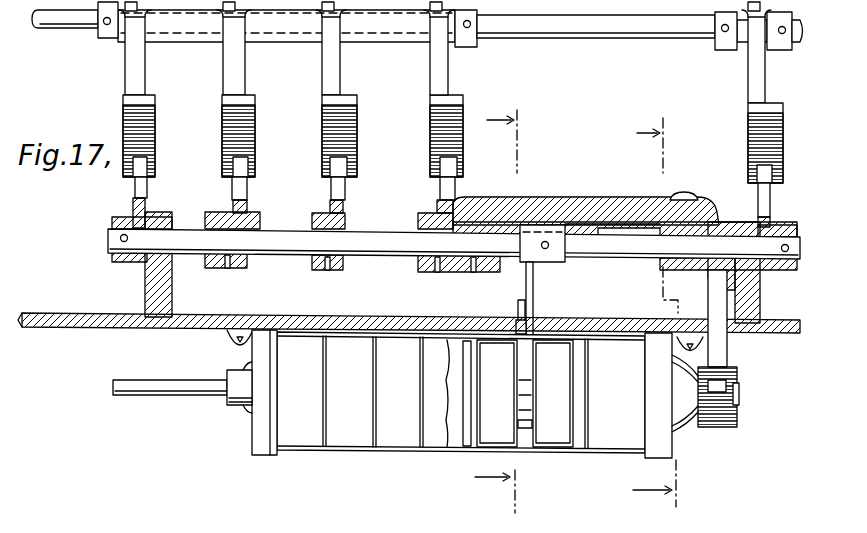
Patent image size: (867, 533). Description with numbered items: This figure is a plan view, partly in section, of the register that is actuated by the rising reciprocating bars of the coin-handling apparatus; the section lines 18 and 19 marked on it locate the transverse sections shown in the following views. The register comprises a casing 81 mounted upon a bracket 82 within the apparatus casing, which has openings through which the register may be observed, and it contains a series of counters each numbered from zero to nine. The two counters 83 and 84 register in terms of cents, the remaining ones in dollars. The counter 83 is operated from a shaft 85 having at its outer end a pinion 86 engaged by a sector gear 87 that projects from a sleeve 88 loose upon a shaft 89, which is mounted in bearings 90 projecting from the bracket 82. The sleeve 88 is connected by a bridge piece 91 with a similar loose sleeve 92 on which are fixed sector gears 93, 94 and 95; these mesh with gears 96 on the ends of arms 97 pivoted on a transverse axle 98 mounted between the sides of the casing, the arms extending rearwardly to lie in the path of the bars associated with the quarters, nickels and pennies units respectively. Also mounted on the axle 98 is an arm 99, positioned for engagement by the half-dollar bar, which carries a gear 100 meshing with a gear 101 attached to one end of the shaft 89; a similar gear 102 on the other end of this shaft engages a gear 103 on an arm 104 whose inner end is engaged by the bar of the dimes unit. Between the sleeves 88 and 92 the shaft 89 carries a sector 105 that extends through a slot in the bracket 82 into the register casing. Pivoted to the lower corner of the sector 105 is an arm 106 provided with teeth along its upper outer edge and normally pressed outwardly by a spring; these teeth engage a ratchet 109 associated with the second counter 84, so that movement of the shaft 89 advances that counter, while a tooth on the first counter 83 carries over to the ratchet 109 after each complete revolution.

The section line 18- 18 is at (650, 317).
The section line 19- 19 is at (496, 311).
The casing 81 is at (302, 453).
The bracket 82 is at (109, 323).
The first counter 83 is at (569, 441).
The second counter 84 is at (487, 433).
The shaft 85 is at (739, 398).
The pinion 86 is at (723, 427).
The sector gear 87 is at (727, 352).
The sleeve 88 is at (720, 220).
The shaft 89 is at (601, 242).
The bearings 90 is at (171, 298).
The bridge piece 91 is at (571, 199).
The sleeve 92 is at (378, 228).
The sector gear 93 is at (445, 196).
The sector gear 94 is at (335, 198).
The sector gear 95 is at (235, 200).
The gears 96 is at (248, 138).
The arms 97 is at (430, 76).
The transverse axle 98 is at (640, 37).
The arm 99 is at (755, 78).
The gear 100 is at (750, 145).
The gear 101 is at (765, 198).
The gear 102 is at (133, 210).
The gear 103 is at (130, 112).
The arm 104 is at (125, 73).
The sector 105 is at (535, 289).
The arm 106 is at (521, 318).
The ratchet 109 is at (524, 428).